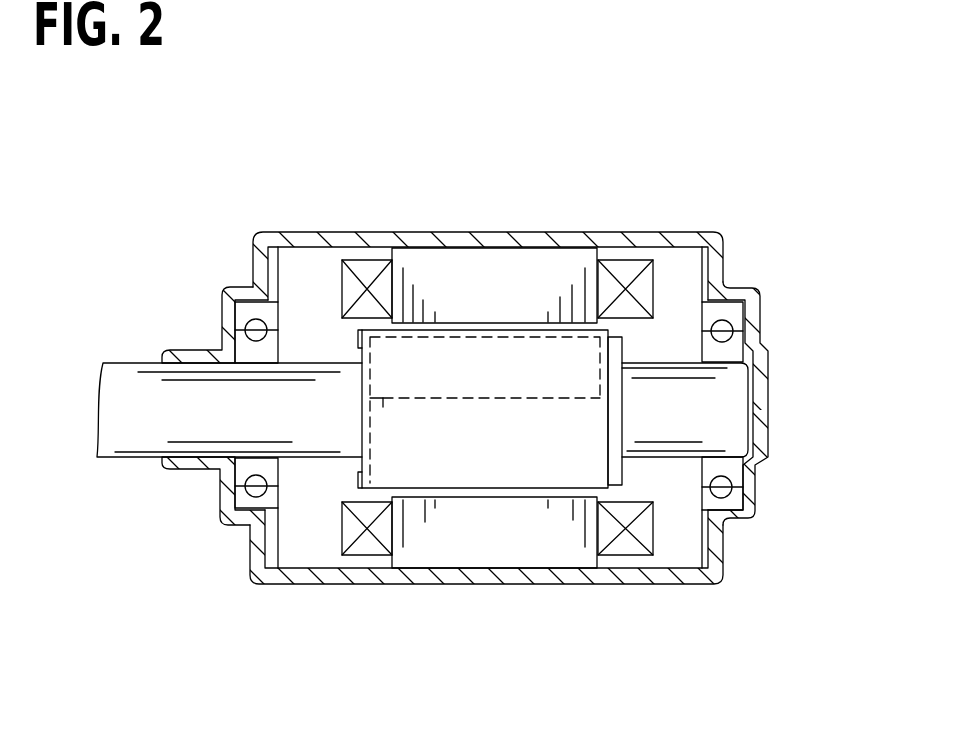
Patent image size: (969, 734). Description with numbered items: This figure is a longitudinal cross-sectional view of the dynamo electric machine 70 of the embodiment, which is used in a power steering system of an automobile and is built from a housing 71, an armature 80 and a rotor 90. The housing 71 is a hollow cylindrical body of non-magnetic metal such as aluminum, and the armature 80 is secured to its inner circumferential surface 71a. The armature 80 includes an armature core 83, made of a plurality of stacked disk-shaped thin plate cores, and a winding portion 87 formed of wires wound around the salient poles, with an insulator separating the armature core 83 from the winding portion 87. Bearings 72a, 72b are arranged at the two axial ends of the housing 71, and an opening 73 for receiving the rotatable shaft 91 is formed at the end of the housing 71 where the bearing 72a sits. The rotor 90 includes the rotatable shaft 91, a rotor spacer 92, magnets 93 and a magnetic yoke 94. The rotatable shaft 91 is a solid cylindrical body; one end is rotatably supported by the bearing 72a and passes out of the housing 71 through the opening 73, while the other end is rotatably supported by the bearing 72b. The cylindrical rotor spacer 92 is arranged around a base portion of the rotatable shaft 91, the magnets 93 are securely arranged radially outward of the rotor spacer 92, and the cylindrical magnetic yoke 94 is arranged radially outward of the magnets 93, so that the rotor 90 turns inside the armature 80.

The dynamo electric machine 70 is at (438, 97).
The housing 71 is at (250, 260).
The inner circumferential surface 71a is at (283, 250).
The bearing 72a is at (222, 297).
The bearing 72b is at (733, 312).
The opening 73 is at (165, 457).
The armature 80 is at (515, 346).
The armature core 83 is at (390, 262).
The winding portion 87 is at (630, 260).
The rotor 90 is at (583, 504).
The rotatable shaft 91 is at (123, 363).
The rotor spacer 92 is at (623, 468).
The magnets 93 is at (562, 400).
The magnetic yoke 94 is at (500, 493).